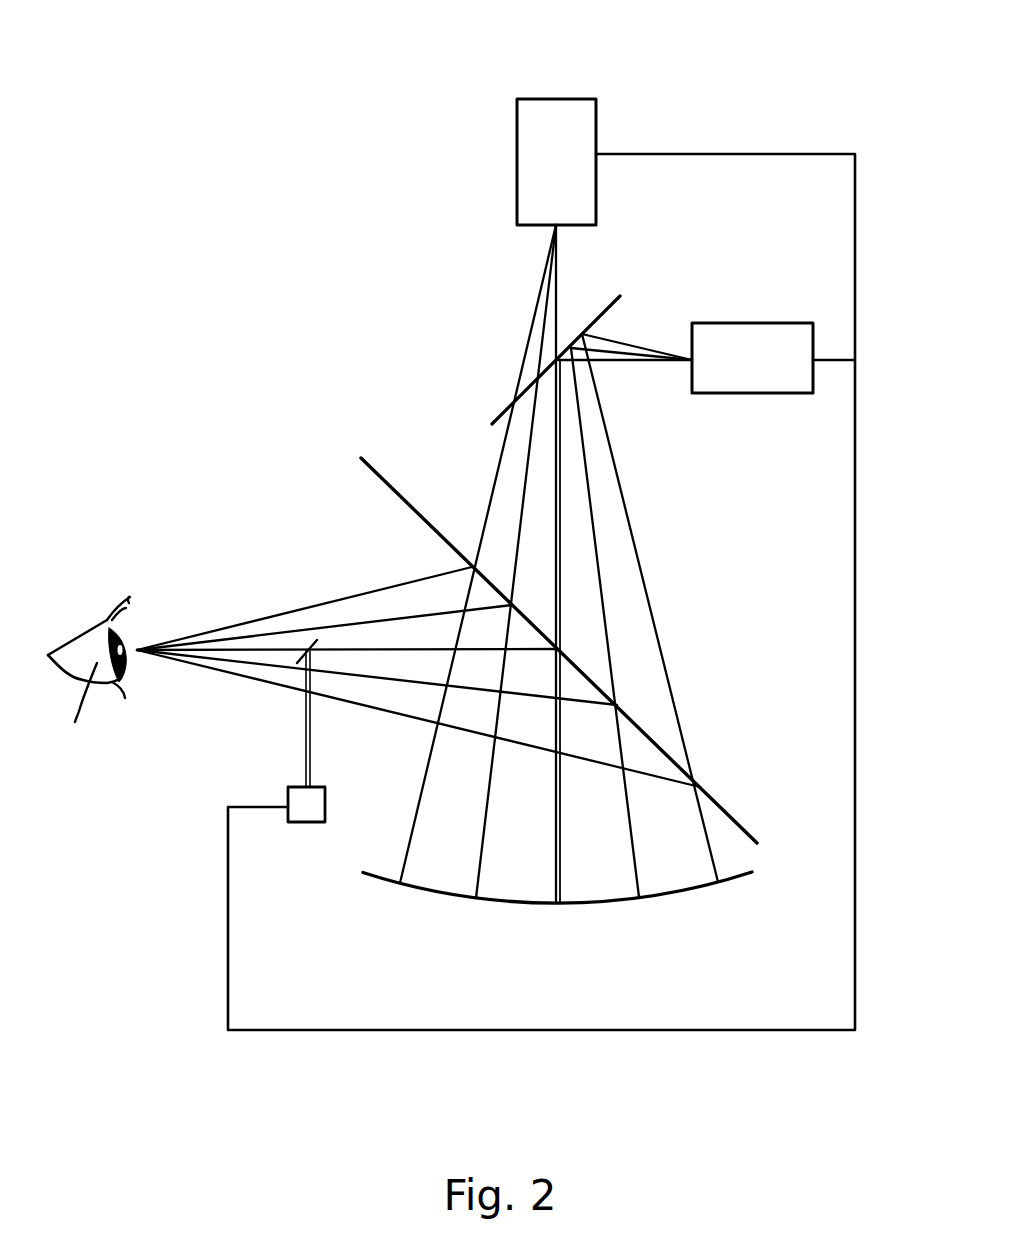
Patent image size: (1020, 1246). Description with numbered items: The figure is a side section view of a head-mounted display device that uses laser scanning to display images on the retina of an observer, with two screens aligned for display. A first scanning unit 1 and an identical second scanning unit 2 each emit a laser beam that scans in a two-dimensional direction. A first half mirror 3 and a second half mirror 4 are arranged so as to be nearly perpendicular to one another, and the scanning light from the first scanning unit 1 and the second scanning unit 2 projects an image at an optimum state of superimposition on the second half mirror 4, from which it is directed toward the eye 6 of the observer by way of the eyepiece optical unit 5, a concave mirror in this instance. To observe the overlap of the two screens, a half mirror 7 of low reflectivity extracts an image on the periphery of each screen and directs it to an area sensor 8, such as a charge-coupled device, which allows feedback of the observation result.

The first scanning unit 1 is at (556, 99).
The second scanning unit 2 is at (758, 337).
The first half mirror 3 is at (500, 413).
The second half mirror 4 is at (737, 820).
The eyepiece optical unit 5 is at (503, 903).
The eye of an observer 6 is at (89, 680).
The half mirror 7 is at (317, 640).
The area sensor 8 is at (308, 822).